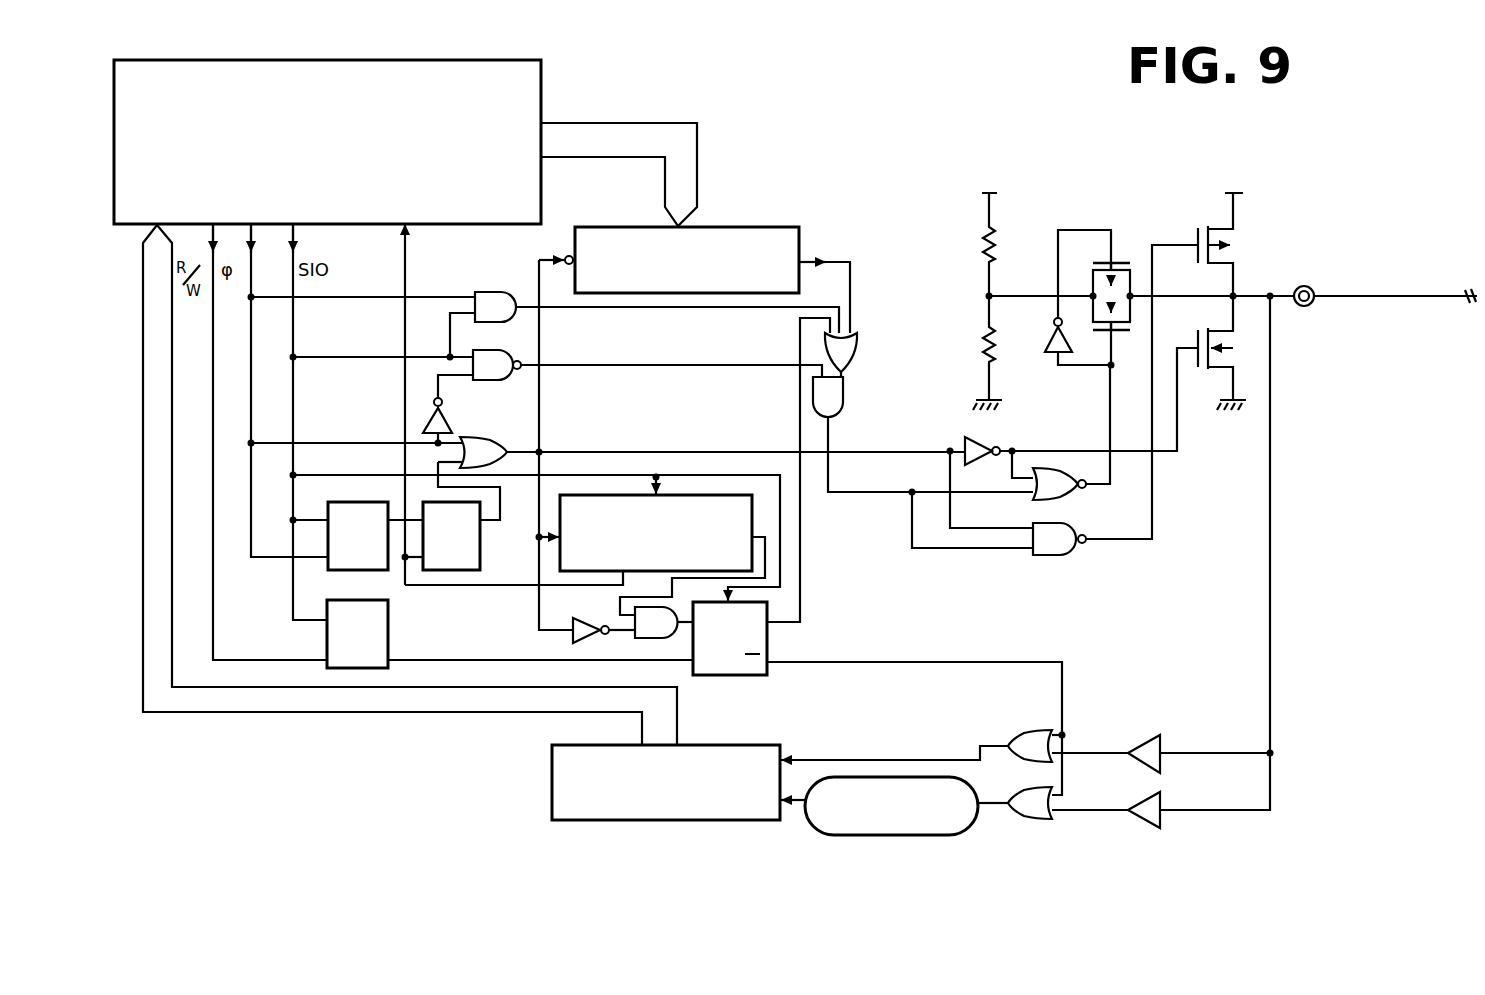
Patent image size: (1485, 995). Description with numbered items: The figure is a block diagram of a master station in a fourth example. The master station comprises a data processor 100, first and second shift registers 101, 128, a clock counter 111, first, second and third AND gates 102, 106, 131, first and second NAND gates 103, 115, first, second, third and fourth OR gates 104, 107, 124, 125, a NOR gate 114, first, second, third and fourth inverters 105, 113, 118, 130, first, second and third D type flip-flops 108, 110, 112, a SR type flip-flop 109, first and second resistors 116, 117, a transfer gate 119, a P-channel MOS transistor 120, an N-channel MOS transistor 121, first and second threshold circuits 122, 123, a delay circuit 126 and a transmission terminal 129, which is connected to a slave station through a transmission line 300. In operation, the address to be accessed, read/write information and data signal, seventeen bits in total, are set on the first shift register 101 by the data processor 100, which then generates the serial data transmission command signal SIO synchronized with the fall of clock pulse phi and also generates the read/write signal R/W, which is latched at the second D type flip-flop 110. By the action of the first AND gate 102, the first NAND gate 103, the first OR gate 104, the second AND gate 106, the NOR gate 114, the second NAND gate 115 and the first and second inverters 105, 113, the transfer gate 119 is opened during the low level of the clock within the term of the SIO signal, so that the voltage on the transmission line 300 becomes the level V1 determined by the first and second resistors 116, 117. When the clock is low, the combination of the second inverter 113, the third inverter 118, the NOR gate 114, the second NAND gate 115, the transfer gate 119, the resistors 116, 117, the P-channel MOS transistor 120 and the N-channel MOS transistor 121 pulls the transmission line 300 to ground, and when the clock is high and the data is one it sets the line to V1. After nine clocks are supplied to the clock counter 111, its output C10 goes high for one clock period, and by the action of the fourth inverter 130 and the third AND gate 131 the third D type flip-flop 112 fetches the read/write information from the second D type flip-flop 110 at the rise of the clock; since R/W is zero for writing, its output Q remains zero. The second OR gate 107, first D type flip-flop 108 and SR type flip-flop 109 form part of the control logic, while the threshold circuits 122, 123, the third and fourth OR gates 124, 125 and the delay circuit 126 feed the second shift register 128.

The data processor 100 is at (541, 88).
The first shift register 101 is at (722, 226).
The first AND gate 102 is at (497, 290).
The first NAND gate 103 is at (525, 352).
The first OR gate 104 is at (857, 347).
The first inverter 105 is at (447, 414).
The second AND gate 106 is at (843, 390).
The second OR gate 107 is at (530, 437).
The first D type flip-flop 108 is at (362, 502).
The SR type flip-flop 109 is at (482, 532).
The second D type flip-flop 110 is at (390, 628).
The clock counter 111 is at (686, 495).
The third D type flip-flop 112 is at (770, 640).
The second inverter 113 is at (978, 438).
The NOR gate 114 is at (1066, 500).
The second NAND gate 115 is at (1060, 558).
The first resistor 116 is at (983, 242).
The second resistor 117 is at (982, 346).
The third inverter 118 is at (1045, 342).
The transfer gate 119 is at (1130, 255).
The P-channel MOS transistor 120 is at (1250, 239).
The N-channel MOS transistor 121 is at (1205, 372).
The first threshold circuit 122 is at (1150, 733).
The second threshold circuit 123 is at (1140, 830).
The third OR gate 124 is at (1030, 730).
The fourth OR gate 125 is at (1030, 820).
The delay circuit 126 is at (898, 835).
The second shift register 128 is at (672, 822).
The transmission terminal 129 is at (1308, 307).
The fourth inverter 130 is at (572, 620).
The third AND gate 131 is at (657, 638).
The transmission line 300 is at (1385, 297).